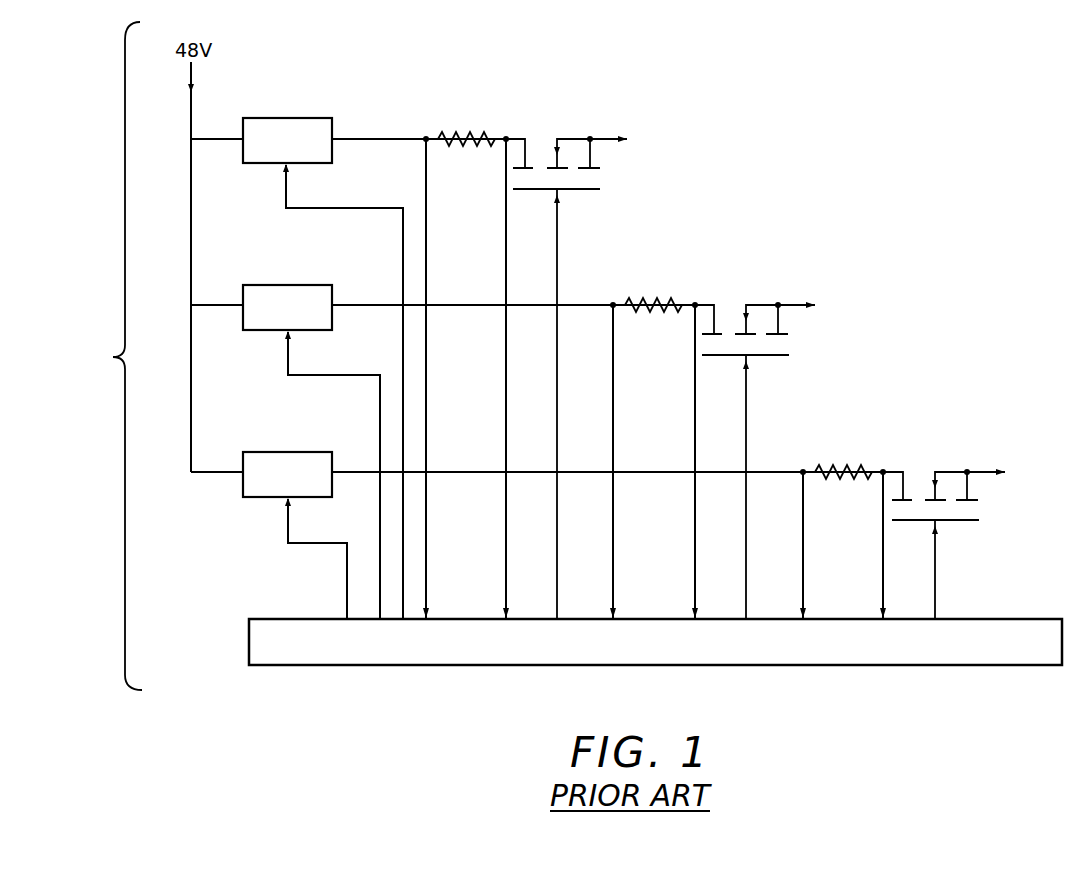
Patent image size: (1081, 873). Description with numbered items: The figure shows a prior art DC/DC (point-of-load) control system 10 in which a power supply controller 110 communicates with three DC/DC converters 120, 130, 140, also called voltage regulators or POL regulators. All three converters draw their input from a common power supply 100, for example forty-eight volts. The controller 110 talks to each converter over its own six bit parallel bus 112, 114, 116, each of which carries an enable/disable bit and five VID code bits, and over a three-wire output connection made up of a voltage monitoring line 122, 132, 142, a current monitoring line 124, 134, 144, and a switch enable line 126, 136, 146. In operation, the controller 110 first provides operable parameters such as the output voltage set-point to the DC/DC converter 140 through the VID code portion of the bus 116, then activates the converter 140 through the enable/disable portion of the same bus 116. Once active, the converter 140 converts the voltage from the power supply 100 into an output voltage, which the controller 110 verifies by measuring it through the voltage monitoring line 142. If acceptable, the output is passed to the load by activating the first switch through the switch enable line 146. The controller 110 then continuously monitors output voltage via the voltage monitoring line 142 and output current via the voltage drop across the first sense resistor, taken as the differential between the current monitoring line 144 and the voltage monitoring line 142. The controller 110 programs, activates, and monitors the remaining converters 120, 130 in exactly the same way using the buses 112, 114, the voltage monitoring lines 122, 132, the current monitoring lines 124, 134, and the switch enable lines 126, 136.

The DC/DC control system 10 is at (110, 356).
The power supply 100 is at (191, 252).
The power supply controller 110 is at (249, 636).
The six bit parallel bus 112 is at (347, 573).
The six bit parallel bus 114 is at (380, 490).
The six bit parallel bus 116 is at (404, 565).
The DC/DC converter 120 is at (332, 462).
The DC/DC converter 130 is at (332, 318).
The DC/DC converter 140 is at (332, 150).
The voltage monitoring line 122 is at (803, 502).
The current monitoring line 124 is at (883, 550).
The switch enable line 126 is at (935, 550).
The voltage monitoring line 132 is at (613, 365).
The current monitoring line 134 is at (695, 410).
The switch enable line 136 is at (746, 395).
The voltage monitoring line 142 is at (426, 188).
The current monitoring line 144 is at (506, 225).
The switch enable line 146 is at (557, 220).